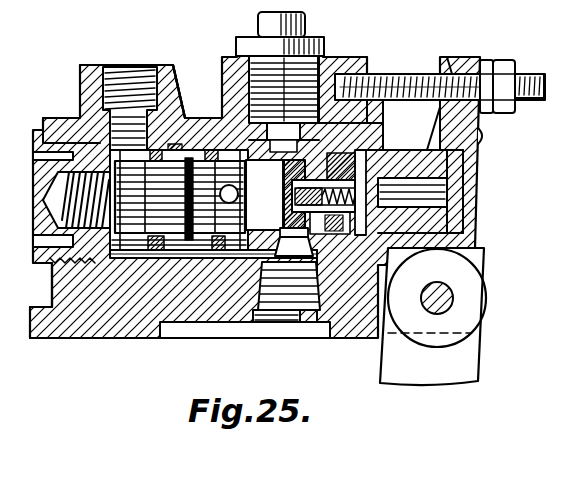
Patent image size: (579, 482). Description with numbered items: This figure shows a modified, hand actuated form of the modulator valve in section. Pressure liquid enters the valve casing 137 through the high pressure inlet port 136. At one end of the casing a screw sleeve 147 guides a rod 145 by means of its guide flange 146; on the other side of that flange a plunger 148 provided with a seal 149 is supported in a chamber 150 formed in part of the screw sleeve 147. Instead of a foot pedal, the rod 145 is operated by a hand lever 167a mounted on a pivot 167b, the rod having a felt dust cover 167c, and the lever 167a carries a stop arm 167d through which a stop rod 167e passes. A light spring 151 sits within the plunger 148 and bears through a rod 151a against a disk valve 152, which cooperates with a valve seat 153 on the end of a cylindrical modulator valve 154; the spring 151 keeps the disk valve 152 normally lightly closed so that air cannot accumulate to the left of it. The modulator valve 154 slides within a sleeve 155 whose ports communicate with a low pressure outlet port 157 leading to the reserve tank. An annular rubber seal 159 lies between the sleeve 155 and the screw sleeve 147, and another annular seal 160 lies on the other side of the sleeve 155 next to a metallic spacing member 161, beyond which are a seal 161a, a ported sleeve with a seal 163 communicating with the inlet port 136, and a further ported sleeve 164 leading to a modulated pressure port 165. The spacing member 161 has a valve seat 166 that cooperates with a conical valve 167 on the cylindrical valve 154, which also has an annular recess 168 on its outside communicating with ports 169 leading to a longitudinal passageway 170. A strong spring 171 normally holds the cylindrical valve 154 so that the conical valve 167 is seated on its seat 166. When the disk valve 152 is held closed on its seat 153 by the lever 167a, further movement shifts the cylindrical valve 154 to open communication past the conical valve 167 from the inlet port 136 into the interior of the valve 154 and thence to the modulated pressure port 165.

The high pressure inlet port 136 is at (140, 275).
The valve casing 137 is at (200, 117).
The rod 145 is at (450, 193).
The guide flange 146 is at (474, 258).
The screw sleeve 147 is at (381, 106).
The plunger 148 is at (381, 130).
The seal 149 is at (340, 286).
The chamber 150 is at (411, 113).
The light spring 151 is at (380, 190).
The rod 151a is at (343, 103).
The disk valve 152 is at (277, 198).
The valve seat 153 is at (268, 348).
The cylindrical modulator valve 154 is at (93, 255).
The sleeve 155 is at (266, 195).
The low pressure outlet port 157 is at (297, 312).
The annular rubber seal 159 is at (310, 262).
The annular seal 160 is at (265, 82).
The metallic spacing member 161 is at (306, 192).
The seal 161a is at (212, 300).
The seal 163 is at (123, 153).
The ported sleeve 164 is at (105, 125).
The modulated pressure port 165 is at (147, 73).
The valve seat 166 is at (182, 262).
The conical valve 167 is at (150, 252).
The hand lever 167a is at (457, 378).
The pivot 167b is at (454, 297).
The felt dust cover 167c is at (455, 222).
The stop arm 167d is at (484, 135).
The stop rod 167e is at (530, 76).
The annular recess 168 is at (235, 242).
The ports 169 is at (182, 138).
The longitudinal passageway 170 is at (86, 275).
The strong spring 171 is at (56, 224).